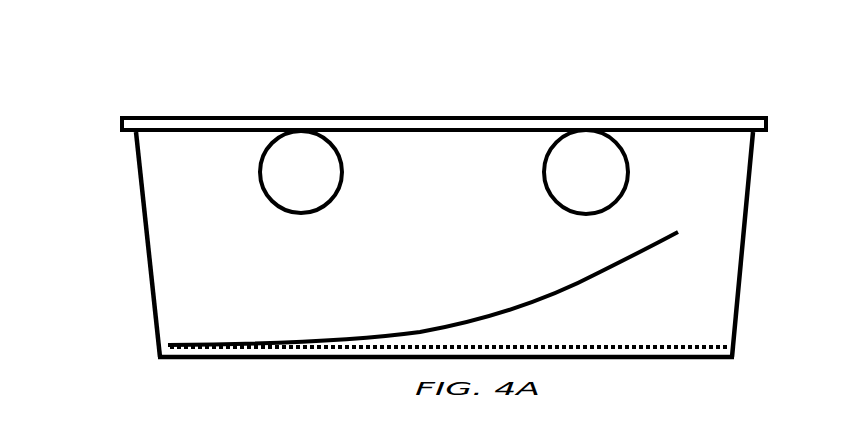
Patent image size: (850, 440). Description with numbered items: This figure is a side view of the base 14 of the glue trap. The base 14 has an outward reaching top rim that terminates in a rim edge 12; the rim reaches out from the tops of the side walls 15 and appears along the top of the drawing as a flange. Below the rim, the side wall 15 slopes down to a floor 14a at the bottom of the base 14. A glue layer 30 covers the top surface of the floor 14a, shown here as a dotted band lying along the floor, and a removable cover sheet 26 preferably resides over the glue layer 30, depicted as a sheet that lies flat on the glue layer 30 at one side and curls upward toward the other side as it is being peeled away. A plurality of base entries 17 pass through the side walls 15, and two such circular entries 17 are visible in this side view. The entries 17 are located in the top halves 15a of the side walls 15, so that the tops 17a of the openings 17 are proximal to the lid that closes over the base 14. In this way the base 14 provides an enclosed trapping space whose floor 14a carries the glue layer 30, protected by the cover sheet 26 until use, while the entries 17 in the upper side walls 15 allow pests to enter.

The base 14 is at (116, 70).
The rim edge 12 is at (770, 119).
The top half of side wall 15a is at (130, 137).
The floor 14a is at (653, 352).
The side wall 15 is at (459, 208).
The base entry 17 is at (318, 185).
The top of opening 17a is at (307, 133).
The removable cover sheet 26 is at (547, 297).
The glue layer 30 is at (578, 347).